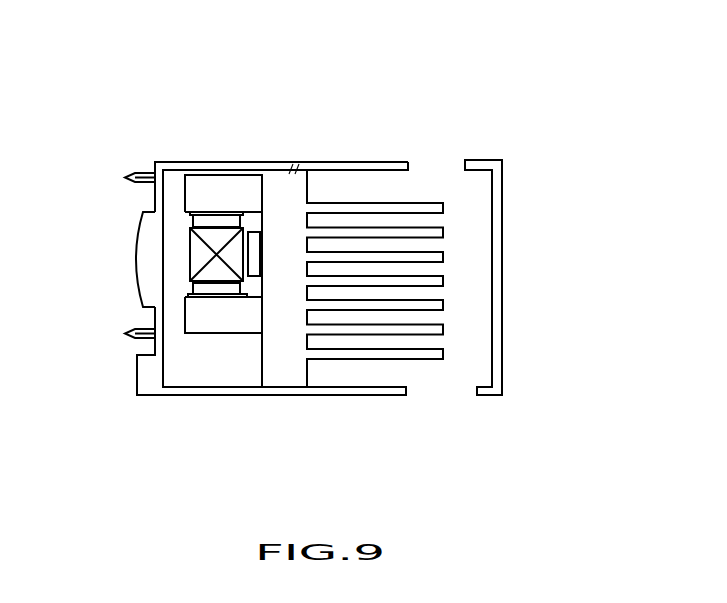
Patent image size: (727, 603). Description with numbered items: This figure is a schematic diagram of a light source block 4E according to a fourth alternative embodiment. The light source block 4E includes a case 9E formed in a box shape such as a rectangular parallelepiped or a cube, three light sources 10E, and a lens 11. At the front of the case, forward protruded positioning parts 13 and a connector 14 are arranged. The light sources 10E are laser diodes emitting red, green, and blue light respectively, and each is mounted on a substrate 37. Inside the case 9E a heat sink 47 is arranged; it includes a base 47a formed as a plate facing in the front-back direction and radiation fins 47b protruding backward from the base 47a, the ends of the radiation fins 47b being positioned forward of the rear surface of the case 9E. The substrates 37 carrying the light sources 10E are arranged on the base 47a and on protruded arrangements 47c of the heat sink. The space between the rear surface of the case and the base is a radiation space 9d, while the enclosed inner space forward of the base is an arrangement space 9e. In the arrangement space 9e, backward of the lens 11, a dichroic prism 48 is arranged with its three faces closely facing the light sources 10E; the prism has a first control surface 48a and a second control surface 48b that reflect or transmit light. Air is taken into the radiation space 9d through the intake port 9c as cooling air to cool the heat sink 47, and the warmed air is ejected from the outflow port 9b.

The light source block 4E is at (562, 99).
The case 9E is at (360, 162).
The outflow port 9b is at (475, 396).
The intake port 9c is at (465, 162).
The radiation space 9d is at (475, 196).
The arrangement space 9e is at (255, 365).
The light source 10E is at (183, 175).
The lens 11 is at (142, 253).
The positioning part 13 is at (143, 172).
The connector 14 is at (137, 386).
The substrate 37 is at (228, 212).
The heat sink 47 is at (293, 163).
The base 47a is at (250, 227).
The radiation fin 47b is at (443, 208).
The protruded arrangement 47c is at (207, 182).
The dichroic prism 48 is at (188, 240).
The first control surface 48a is at (188, 276).
The second control surface 48b is at (181, 247).